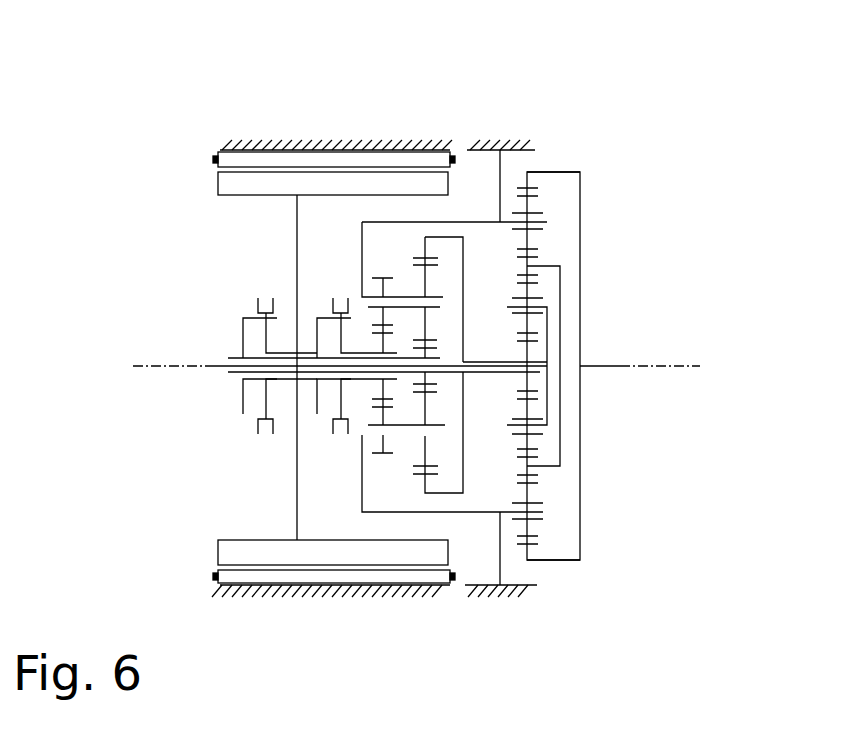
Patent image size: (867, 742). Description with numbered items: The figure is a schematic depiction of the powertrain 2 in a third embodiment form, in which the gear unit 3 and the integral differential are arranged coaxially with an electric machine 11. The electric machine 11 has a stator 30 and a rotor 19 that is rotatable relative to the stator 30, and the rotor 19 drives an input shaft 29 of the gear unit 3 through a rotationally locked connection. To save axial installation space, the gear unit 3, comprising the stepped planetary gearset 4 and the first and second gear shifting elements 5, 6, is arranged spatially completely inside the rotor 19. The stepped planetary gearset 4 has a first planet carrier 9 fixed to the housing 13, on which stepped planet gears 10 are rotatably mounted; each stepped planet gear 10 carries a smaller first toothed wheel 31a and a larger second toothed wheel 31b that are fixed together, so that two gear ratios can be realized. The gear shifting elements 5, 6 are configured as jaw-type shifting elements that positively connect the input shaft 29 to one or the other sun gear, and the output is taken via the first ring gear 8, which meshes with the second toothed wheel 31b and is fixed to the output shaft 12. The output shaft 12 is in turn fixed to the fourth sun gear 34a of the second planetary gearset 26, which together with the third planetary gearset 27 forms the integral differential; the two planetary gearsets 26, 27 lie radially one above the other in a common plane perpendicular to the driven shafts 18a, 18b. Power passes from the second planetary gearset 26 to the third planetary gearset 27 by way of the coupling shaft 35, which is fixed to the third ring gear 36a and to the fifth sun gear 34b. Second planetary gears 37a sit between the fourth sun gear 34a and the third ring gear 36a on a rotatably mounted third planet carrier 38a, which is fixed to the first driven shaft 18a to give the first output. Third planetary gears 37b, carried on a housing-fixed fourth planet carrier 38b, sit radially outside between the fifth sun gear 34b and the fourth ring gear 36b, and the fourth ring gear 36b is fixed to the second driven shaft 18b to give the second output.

The powertrain 2 is at (657, 129).
The gear unit 3 is at (262, 466).
The stepped planetary gearset 4 is at (412, 240).
The first gear shifting element 5 is at (265, 292).
The second gear shifting element 6 is at (341, 292).
The first ring gear 8 is at (418, 478).
The first planet carrier 9 is at (432, 276).
The stepped planet gears 10 is at (403, 293).
The electric machine 11 is at (318, 138).
The output shaft 12 is at (487, 372).
The housing 13 is at (517, 147).
The first driven shaft 18a is at (223, 367).
The second driven shaft 18b is at (610, 368).
The rotor 19 is at (243, 187).
The second planetary gearset 26 is at (545, 288).
The third planetary gearset 27 is at (548, 205).
The input shaft 29 is at (297, 220).
The stator 30 is at (290, 160).
The first toothed wheel 31a is at (377, 277).
The second toothed wheel 31b is at (443, 303).
The fourth sun gear 34a is at (535, 388).
The fifth sun gear 34b is at (525, 258).
The coupling shaft 35 is at (557, 265).
The third ring gear 36a is at (532, 272).
The fourth ring gear 36b is at (534, 184).
The second planetary gears 37a is at (525, 323).
The third planetary gears 37b is at (527, 238).
The third planet carrier 38a is at (507, 305).
The fourth planet carrier 38b is at (543, 510).